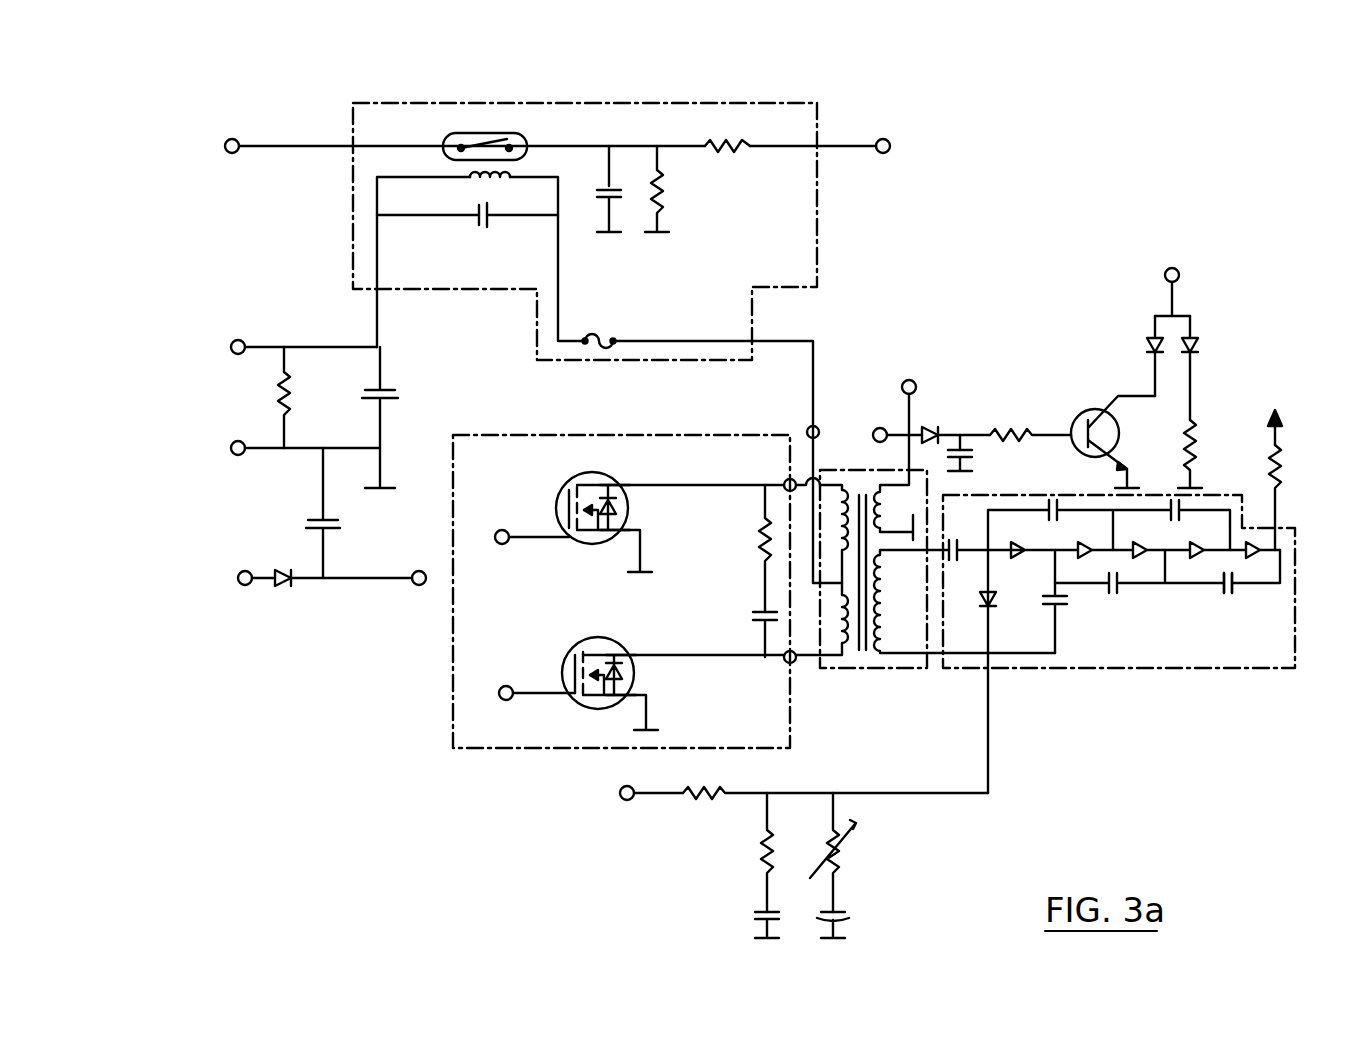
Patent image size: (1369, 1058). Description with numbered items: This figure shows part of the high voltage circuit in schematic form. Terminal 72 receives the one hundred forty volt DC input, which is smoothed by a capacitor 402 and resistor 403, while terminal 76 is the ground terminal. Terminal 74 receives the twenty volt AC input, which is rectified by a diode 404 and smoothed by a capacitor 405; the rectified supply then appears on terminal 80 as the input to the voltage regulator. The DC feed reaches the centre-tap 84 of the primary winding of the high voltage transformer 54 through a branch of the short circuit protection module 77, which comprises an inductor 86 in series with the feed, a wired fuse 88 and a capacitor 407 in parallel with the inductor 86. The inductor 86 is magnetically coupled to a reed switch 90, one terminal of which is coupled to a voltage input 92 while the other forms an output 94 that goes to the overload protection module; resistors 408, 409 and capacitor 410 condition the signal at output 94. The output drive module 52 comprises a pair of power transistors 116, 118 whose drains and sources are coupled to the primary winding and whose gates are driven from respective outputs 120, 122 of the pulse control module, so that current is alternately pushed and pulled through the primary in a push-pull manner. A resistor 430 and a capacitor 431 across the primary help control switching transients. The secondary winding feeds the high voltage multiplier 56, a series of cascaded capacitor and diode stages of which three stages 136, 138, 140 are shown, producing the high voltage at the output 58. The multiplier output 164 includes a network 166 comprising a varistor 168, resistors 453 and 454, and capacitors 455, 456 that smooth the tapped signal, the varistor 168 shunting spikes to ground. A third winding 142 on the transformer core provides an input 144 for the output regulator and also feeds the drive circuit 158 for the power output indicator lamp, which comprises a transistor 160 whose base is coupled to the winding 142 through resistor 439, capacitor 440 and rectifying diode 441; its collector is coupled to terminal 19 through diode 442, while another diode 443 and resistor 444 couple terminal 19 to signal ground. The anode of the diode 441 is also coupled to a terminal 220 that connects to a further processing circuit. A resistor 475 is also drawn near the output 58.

The short circuit protection module 77 is at (820, 110).
The voltage input 92 is at (225, 142).
The output 94 is at (890, 140).
The reed switch 90 is at (528, 140).
The inductor 86 is at (514, 170).
The capacitor 407 is at (470, 234).
The capacitor 410 is at (612, 185).
The resistor 409 is at (664, 206).
The resistor 408 is at (726, 150).
The wired fuse 88 is at (612, 336).
The terminal 72 is at (240, 340).
The resistor 403 is at (292, 398).
The terminal 76 is at (238, 440).
The capacitor 402 is at (398, 397).
The capacitor 405 is at (330, 516).
The terminal 74 is at (245, 585).
The diode 404 is at (284, 590).
The terminal 80 is at (419, 571).
The output drive module 52 is at (744, 434).
The output of pulse control module 122 is at (499, 530).
The power transistor 118 is at (628, 515).
The output of pulse control module 120 is at (504, 686).
The power transistor 116 is at (634, 680).
The resistor 430 is at (758, 546).
The capacitor 431 is at (760, 624).
The high voltage transformer 54 is at (858, 468).
The centre-tap 84 is at (812, 598).
The third winding 142 is at (874, 496).
The input 144 is at (902, 387).
The terminal 220 is at (870, 432).
The rectifying diode 441 is at (930, 424).
The resistor 439 is at (1012, 427).
The capacitor 440 is at (972, 458).
The transistor 160 is at (1112, 417).
The terminal 19 is at (1164, 275).
The drive circuit 158 is at (1214, 335).
The diode 442 is at (1146, 344).
The diode 443 is at (1194, 338).
The resistor 444 is at (1198, 440).
The output 58 is at (1280, 436).
The resistor 475 is at (1280, 490).
The high voltage multiplier 56 is at (1296, 550).
The cascaded stage 136 is at (1004, 577).
The cascaded stage 138 is at (1134, 624).
The cascaded stage 140 is at (1242, 622).
The output 164 is at (618, 794).
The resistor 454 is at (710, 788).
The resistor 453 is at (760, 856).
The capacitor 455 is at (762, 910).
The varistor 168 is at (840, 830).
The capacitor 456 is at (845, 912).
The network 166 is at (892, 838).